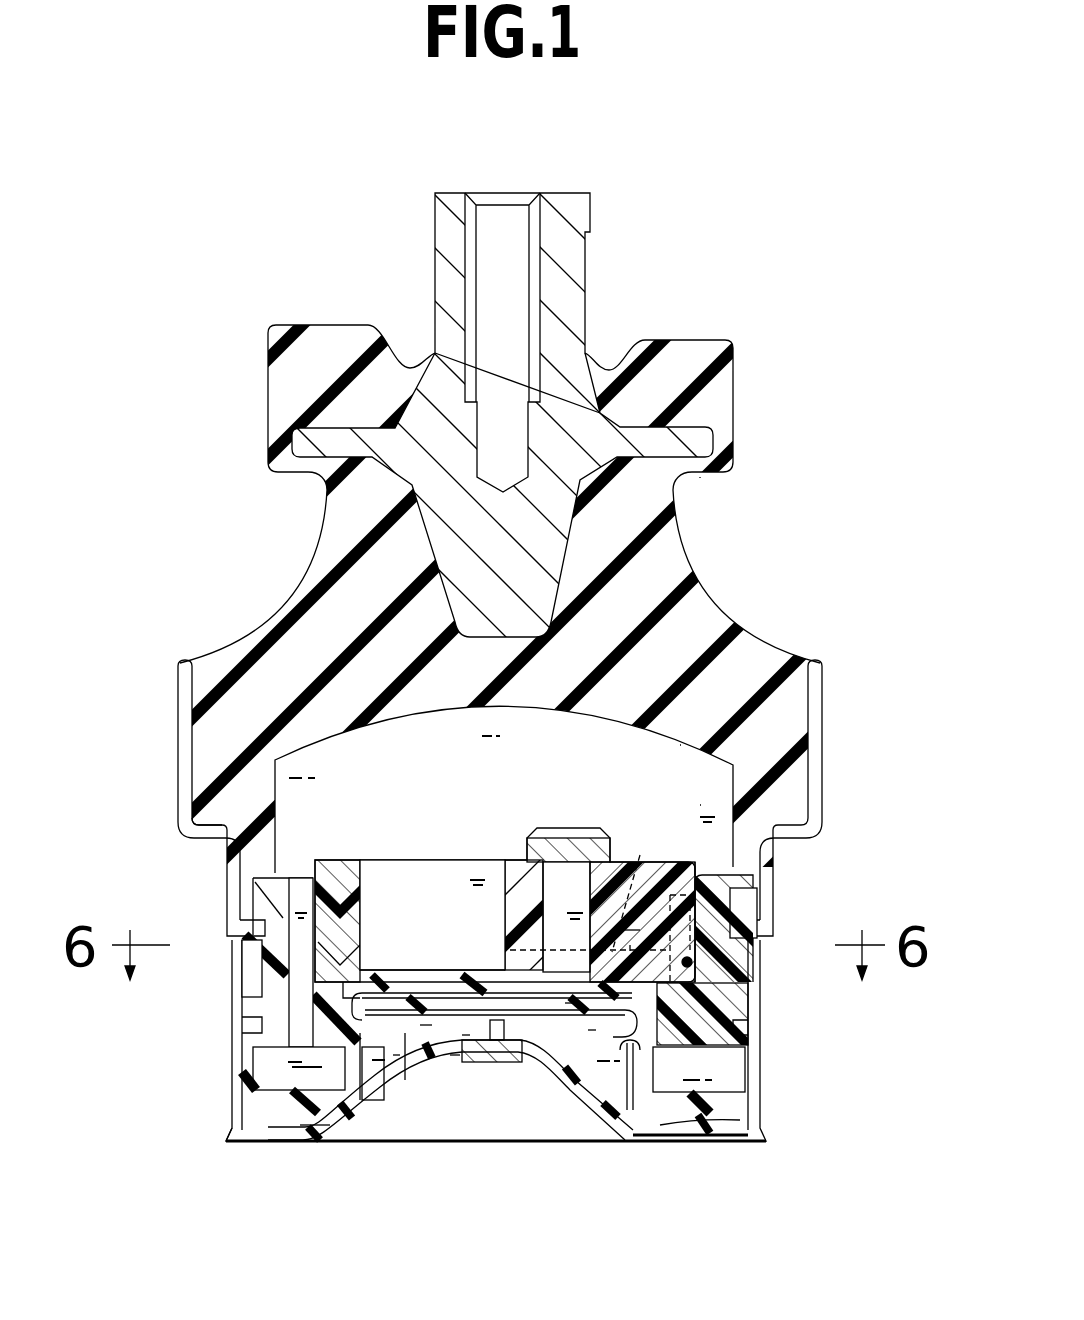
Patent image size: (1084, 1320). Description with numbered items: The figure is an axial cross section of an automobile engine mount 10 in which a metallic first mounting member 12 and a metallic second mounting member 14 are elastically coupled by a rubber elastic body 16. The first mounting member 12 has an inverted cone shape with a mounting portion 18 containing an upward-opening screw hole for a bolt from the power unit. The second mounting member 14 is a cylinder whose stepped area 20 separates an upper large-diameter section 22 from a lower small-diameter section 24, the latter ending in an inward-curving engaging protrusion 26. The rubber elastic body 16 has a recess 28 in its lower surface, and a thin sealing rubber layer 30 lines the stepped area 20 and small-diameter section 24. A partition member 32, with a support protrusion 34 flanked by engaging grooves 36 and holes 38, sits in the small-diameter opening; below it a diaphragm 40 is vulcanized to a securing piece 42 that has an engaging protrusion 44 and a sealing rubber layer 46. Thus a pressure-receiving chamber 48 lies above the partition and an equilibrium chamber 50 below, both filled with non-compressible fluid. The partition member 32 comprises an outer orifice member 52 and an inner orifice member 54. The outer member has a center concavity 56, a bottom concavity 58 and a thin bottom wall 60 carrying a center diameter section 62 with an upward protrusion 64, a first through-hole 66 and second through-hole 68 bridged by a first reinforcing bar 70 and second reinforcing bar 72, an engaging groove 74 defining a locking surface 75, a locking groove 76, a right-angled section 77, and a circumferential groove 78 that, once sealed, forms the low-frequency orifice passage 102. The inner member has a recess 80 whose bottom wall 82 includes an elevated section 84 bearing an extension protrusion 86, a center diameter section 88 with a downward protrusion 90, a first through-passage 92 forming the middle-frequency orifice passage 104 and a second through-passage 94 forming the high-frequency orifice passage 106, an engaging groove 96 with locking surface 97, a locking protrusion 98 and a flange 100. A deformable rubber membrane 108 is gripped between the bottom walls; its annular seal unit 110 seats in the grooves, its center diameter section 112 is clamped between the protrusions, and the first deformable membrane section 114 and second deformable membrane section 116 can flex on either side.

The engine mount 10 is at (770, 199).
The first mounting member 12 is at (432, 268).
The second mounting member 14 is at (178, 698).
The rubber elastic body 16 is at (662, 596).
The mounting portion 18 is at (567, 300).
The stepped area 20 is at (790, 833).
The large-diameter section 22 is at (823, 746).
The small-diameter section 24 is at (237, 870).
The engaging protrusion 26 is at (262, 930).
The recess 28 is at (682, 745).
The sealing rubber layer 30 is at (248, 843).
The partition member 32 is at (697, 807).
The support protrusion 34 is at (745, 1004).
The engaging grooves 36 is at (732, 928).
The holes 38 is at (258, 968).
The diaphragm 40 is at (308, 1126).
The securing piece 42 is at (240, 1090).
The engaging protrusion 44 is at (257, 1026).
The sealing rubber layer 46 is at (748, 1074).
The pressure-receiving chamber 48 is at (385, 755).
The equilibrium chamber 50 is at (660, 1122).
The outer orifice member 52 is at (697, 1122).
The inner orifice member 54 is at (481, 823).
The center concavity 56 is at (375, 925).
The bottom concavity 58 is at (375, 1085).
The bottom wall 60 is at (455, 1055).
The center diameter section 62 is at (513, 1045).
The protrusion 64 is at (495, 1045).
The first through-hole 66 is at (591, 1030).
The second through-hole 68 is at (468, 1035).
The first reinforcing bar 70 is at (557, 1030).
The second reinforcing bar 72 is at (427, 1025).
The engaging groove 74 is at (633, 1095).
The locking surface 75 is at (397, 1055).
The locking groove 76 is at (686, 970).
The right-angled section 77 is at (333, 890).
The circumferential groove 78 is at (747, 1092).
The recess 80 is at (503, 940).
The bottom wall 82 is at (705, 1050).
The elevated section 84 is at (632, 930).
The extension protrusion 86 is at (640, 855).
The center diameter section 88 is at (470, 993).
The protrusion 90 is at (480, 998).
The first through-passage 92 is at (570, 1003).
The second through-passage 94 is at (440, 983).
The engaging groove 96 is at (652, 948).
The locking surface 97 is at (390, 993).
The locking protrusion 98 is at (686, 912).
The flange 100 is at (698, 866).
The low-frequency orifice passage 102 is at (258, 1122).
The middle-frequency orifice passage 104 is at (578, 880).
The high-frequency orifice passage 106 is at (420, 980).
The deformable rubber membrane 108 is at (573, 905).
The annular seal unit 110 is at (400, 993).
The center diameter section 112 is at (533, 1050).
The first deformable membrane section 114 is at (648, 892).
The second deformable membrane section 116 is at (408, 990).